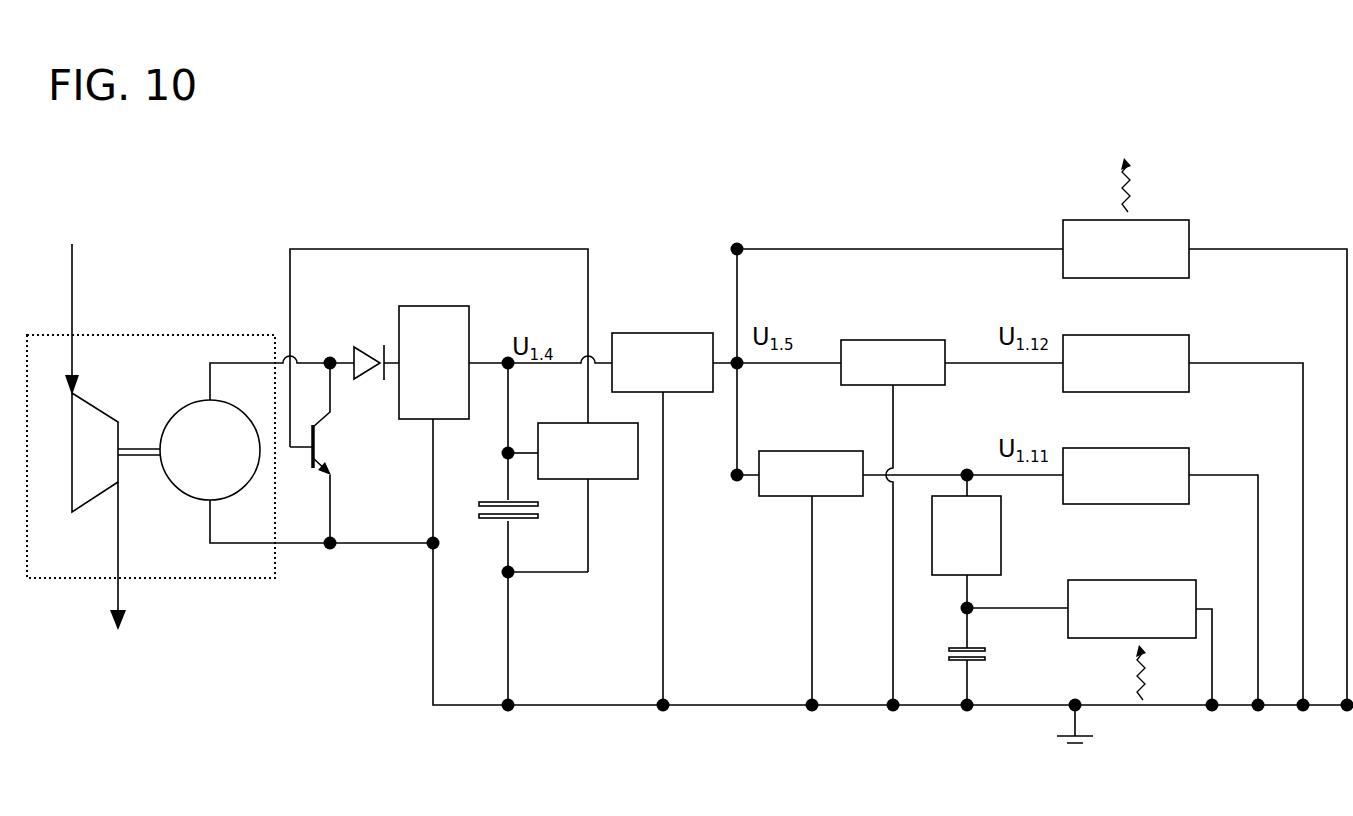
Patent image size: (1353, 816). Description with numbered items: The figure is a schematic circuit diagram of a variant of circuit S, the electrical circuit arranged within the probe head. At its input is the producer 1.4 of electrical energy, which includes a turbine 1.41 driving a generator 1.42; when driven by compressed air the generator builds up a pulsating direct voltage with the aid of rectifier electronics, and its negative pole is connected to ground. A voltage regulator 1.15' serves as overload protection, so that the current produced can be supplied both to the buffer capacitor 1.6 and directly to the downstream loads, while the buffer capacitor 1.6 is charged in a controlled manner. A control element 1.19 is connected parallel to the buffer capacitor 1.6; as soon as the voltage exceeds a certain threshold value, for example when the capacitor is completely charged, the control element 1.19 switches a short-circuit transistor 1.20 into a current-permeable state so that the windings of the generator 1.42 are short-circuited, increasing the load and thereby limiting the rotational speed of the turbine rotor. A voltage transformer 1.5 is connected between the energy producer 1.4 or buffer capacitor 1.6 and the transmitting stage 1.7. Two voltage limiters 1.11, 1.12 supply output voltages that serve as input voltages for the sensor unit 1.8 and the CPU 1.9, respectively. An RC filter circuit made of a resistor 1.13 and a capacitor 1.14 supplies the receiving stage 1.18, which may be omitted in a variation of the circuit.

The circuit S is at (348, 189).
The producer of electrical energy 1.4 is at (238, 570).
The turbine 1.41 is at (105, 420).
The generator 1.42 is at (217, 453).
The short-circuit transistor 1.20 is at (320, 455).
The voltage regulator 1.15' is at (434, 362).
The buffer capacitor 1.6 is at (490, 522).
The control element 1.19 is at (570, 451).
The voltage transformer 1.5 is at (726, 519).
The transmitting stage 1.7 is at (1205, 431).
The sensor unit 1.8 is at (1183, 520).
The CPU 1.9 is at (1160, 576).
The voltage limiter 1.11 is at (900, 578).
The voltage limiter 1.12 is at (952, 522).
The resistor 1.13 is at (966, 541).
The capacitor 1.14 is at (985, 653).
The receiving stage 1.18 is at (1089, 642).